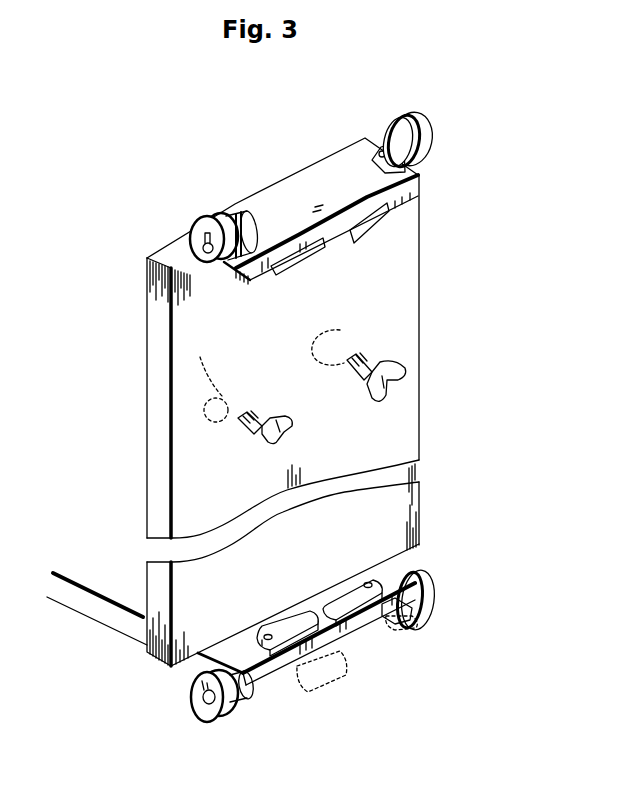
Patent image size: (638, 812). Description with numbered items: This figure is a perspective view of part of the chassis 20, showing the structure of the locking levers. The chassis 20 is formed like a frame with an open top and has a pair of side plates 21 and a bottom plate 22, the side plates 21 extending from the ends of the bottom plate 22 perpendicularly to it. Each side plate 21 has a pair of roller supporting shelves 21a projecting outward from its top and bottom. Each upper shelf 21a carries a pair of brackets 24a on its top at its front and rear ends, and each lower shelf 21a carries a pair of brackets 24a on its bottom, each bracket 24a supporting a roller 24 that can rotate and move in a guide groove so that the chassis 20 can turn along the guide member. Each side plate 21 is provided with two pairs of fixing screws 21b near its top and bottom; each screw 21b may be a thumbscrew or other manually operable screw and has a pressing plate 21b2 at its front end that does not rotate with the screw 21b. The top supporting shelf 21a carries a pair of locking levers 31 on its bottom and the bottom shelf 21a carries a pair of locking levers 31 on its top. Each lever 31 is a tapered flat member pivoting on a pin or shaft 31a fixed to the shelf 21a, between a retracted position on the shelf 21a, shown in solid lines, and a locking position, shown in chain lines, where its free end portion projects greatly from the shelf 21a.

The chassis 20 is at (419, 343).
The side plate 21 is at (153, 442).
The roller supporting shelf 21a is at (407, 203).
The fixing screw 21b is at (284, 418).
The pressing plate 21b2 is at (295, 370).
The bottom plate 22 is at (78, 606).
The roller 24 is at (426, 123).
The bracket 24a is at (250, 227).
The locking lever 31 is at (364, 233).
The pin 31a is at (267, 633).